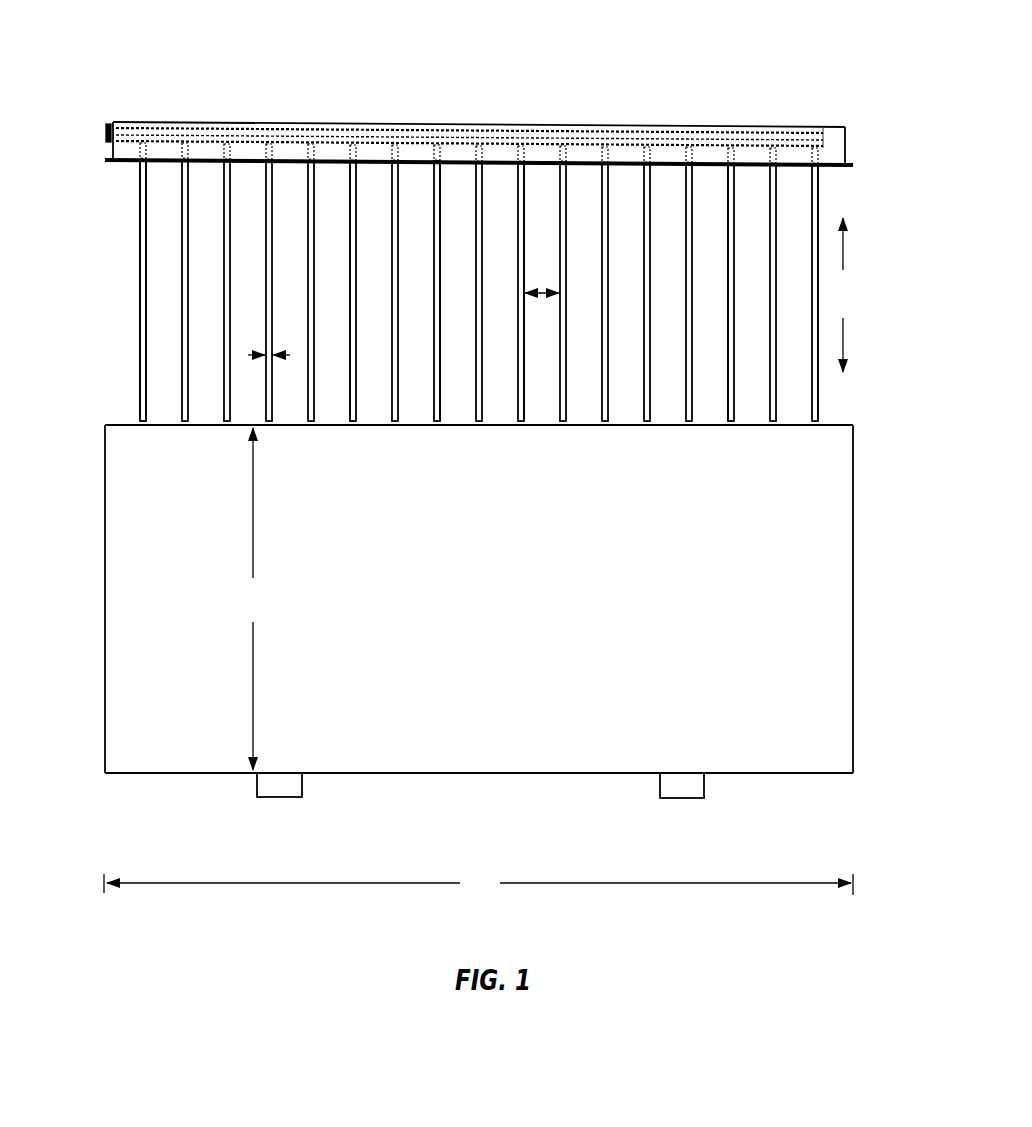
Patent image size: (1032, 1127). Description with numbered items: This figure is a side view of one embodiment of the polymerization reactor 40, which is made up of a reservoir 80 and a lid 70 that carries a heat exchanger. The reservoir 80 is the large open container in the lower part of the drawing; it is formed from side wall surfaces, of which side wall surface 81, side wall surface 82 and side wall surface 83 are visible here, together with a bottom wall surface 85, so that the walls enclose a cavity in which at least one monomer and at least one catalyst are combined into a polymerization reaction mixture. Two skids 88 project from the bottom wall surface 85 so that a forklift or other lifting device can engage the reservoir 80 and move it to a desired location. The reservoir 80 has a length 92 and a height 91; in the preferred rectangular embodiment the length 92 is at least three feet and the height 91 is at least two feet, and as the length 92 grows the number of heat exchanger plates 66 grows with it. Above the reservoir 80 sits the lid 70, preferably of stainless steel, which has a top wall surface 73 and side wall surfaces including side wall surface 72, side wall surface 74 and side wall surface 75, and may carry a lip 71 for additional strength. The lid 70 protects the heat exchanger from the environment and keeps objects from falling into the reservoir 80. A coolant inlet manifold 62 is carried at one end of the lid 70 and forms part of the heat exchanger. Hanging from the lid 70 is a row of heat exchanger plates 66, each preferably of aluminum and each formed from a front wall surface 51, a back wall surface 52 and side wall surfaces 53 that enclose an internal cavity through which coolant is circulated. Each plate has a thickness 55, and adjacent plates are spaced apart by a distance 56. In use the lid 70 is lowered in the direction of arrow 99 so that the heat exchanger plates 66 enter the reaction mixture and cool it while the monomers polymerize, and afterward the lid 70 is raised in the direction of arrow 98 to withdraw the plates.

The polymerization reactor 40 is at (140, 55).
The front wall surface 51 is at (140, 268).
The back wall surface 52 is at (147, 408).
The side wall surface 53 is at (142, 233).
The thickness 55 is at (262, 352).
The distance 56 is at (543, 288).
The coolant inlet manifold 62 is at (108, 132).
The heat exchanger plate 66 is at (147, 205).
The lid 70 is at (836, 118).
The lip 71 is at (835, 165).
The side wall surface 72 is at (848, 157).
The top wall surface 73 is at (637, 122).
The side wall surface 74 is at (108, 150).
The side wall surface 75 is at (829, 140).
The reservoir 80 is at (502, 778).
The side wall surface 81 is at (104, 436).
The side wall surface 82 is at (854, 570).
The side wall surface 83 is at (496, 614).
The bottom wall surface 85 is at (370, 775).
The skid 88 is at (286, 798).
The height 91 is at (251, 599).
The length 92 is at (478, 885).
The arrow 98 is at (864, 244).
The arrow 99 is at (864, 345).